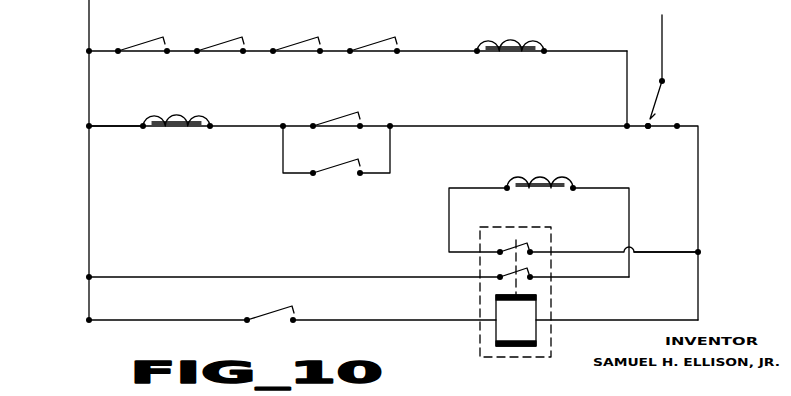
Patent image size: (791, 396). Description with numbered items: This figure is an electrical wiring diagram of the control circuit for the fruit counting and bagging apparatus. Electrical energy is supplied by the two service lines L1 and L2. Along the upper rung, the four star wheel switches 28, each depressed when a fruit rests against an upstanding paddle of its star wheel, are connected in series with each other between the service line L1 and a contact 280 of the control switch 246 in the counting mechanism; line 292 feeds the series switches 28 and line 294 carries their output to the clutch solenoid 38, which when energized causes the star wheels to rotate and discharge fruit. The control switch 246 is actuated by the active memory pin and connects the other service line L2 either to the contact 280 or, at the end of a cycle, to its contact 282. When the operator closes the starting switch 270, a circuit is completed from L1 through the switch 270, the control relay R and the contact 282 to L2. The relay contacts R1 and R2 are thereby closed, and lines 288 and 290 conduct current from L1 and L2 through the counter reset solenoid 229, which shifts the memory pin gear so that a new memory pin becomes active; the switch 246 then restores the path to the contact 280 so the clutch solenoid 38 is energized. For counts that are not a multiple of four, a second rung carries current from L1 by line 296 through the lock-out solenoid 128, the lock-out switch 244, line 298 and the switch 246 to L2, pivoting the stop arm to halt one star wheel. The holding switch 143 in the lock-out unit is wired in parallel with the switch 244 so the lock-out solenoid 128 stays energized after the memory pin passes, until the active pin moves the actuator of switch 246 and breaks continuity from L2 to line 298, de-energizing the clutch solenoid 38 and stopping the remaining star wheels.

The service line L1 is at (89, 25).
The service line L2 is at (664, 42).
The star wheel switch 28 is at (141, 45).
The clutch solenoid 38 is at (518, 42).
The lock-out solenoid 128 is at (172, 118).
The holding switch 143 is at (342, 166).
The counter reset solenoid 229 is at (549, 150).
The lock-out switch 244 is at (343, 118).
The control switch 246 is at (657, 101).
The starting switch 270 is at (270, 310).
The contact 280 is at (648, 130).
The contact 282 is at (677, 129).
The line 288 is at (355, 277).
The line 290 is at (670, 254).
The line 292 is at (100, 53).
The line 294 is at (626, 83).
The line 296 is at (117, 128).
The line 298 is at (498, 126).
The control relay R is at (479, 331).
The relay contact R1 is at (526, 270).
The relay contact R2 is at (525, 245).